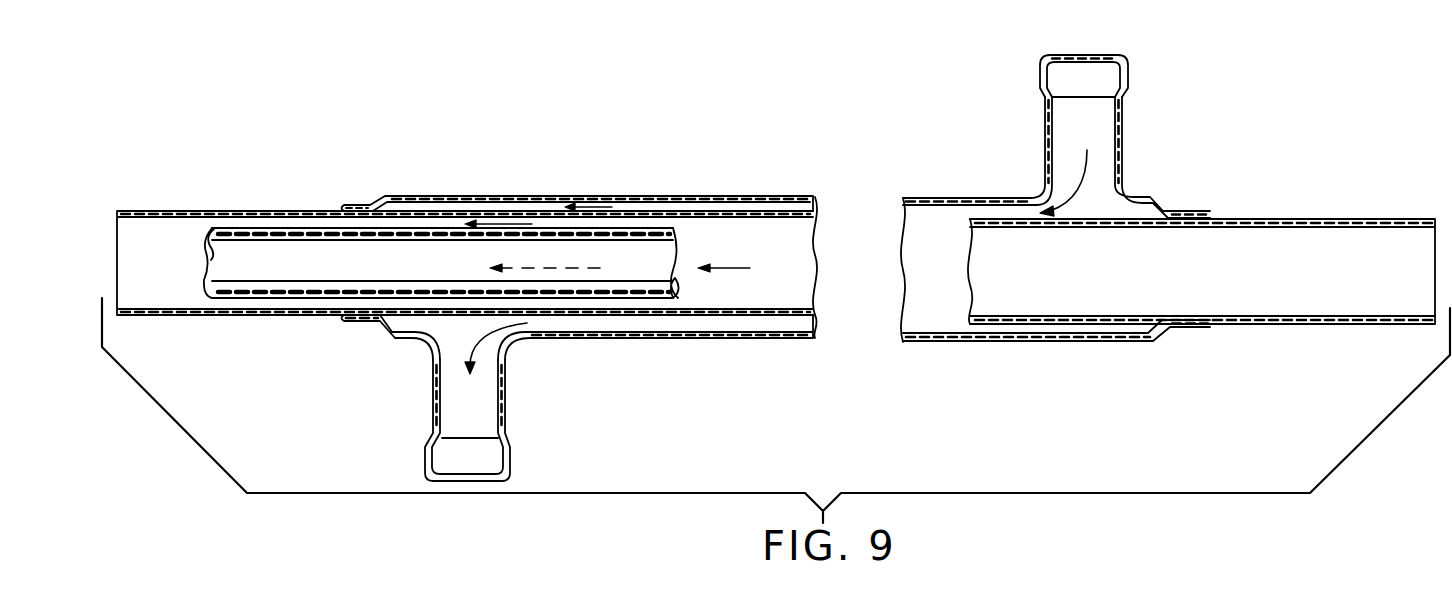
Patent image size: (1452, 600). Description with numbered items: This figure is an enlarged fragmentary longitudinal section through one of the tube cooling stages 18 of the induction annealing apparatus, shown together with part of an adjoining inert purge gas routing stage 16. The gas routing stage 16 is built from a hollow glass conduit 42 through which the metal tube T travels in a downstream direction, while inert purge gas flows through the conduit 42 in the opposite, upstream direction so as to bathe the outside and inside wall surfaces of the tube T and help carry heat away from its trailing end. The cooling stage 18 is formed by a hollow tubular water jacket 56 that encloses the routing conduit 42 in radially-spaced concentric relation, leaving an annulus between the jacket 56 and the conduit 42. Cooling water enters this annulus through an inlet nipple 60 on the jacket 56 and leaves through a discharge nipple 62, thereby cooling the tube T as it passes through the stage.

The inert purge gas routing stage 16 is at (744, 194).
The tube cooling stage 18 is at (470, 305).
The glass conduit 42 is at (1322, 219).
The water jacket 56 is at (467, 195).
The inlet nipple 60 is at (1124, 140).
The discharge nipple 62 is at (507, 405).
The metal tube T is at (286, 245).